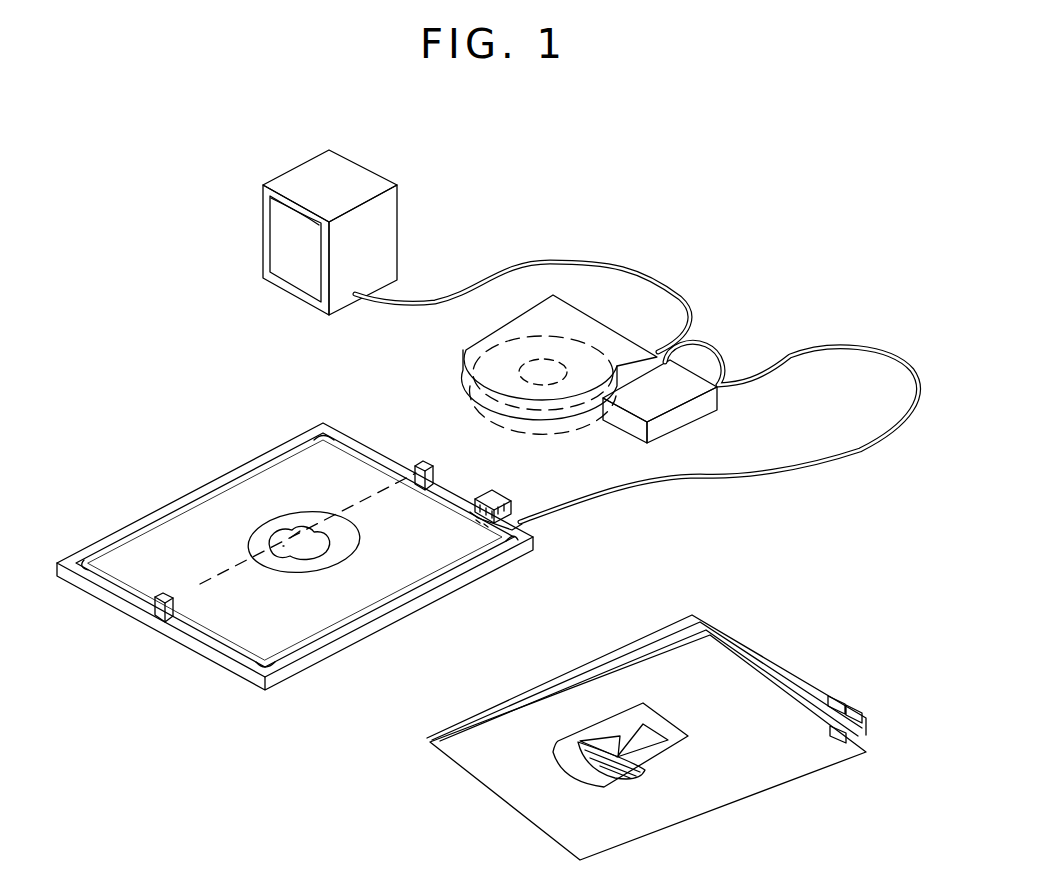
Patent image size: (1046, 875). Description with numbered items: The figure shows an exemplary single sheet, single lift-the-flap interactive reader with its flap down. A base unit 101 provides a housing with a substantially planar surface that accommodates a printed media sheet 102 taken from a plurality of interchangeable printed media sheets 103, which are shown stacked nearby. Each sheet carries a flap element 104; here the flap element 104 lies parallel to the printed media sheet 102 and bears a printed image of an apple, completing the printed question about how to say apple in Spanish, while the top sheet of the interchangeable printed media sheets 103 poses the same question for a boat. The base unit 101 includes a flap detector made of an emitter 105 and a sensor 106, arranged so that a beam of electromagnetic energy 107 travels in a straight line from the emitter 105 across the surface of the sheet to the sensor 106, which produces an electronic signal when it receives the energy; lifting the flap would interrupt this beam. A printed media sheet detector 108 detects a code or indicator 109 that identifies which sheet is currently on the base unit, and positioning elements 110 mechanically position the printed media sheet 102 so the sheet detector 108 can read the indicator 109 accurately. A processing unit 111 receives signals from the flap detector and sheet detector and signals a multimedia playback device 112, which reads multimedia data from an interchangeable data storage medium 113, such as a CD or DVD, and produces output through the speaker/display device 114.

The base unit 101 is at (297, 433).
The printed media sheet 102 is at (262, 491).
The plurality of interchangeable printed media sheets 103 is at (785, 700).
The flap element 104 is at (259, 539).
The emitter 105 is at (160, 612).
The sensor 106 is at (418, 450).
The beam of electromagnetic energy 107 is at (205, 580).
The printed media sheet detector 108 is at (497, 498).
The sheet indicator 109 is at (497, 537).
The positioning elements 110 is at (272, 668).
The processing unit 111 is at (683, 413).
The multimedia playback device 112 is at (562, 420).
The interchangeable data storage medium 113 is at (500, 373).
The speaker/display device 114 is at (285, 274).